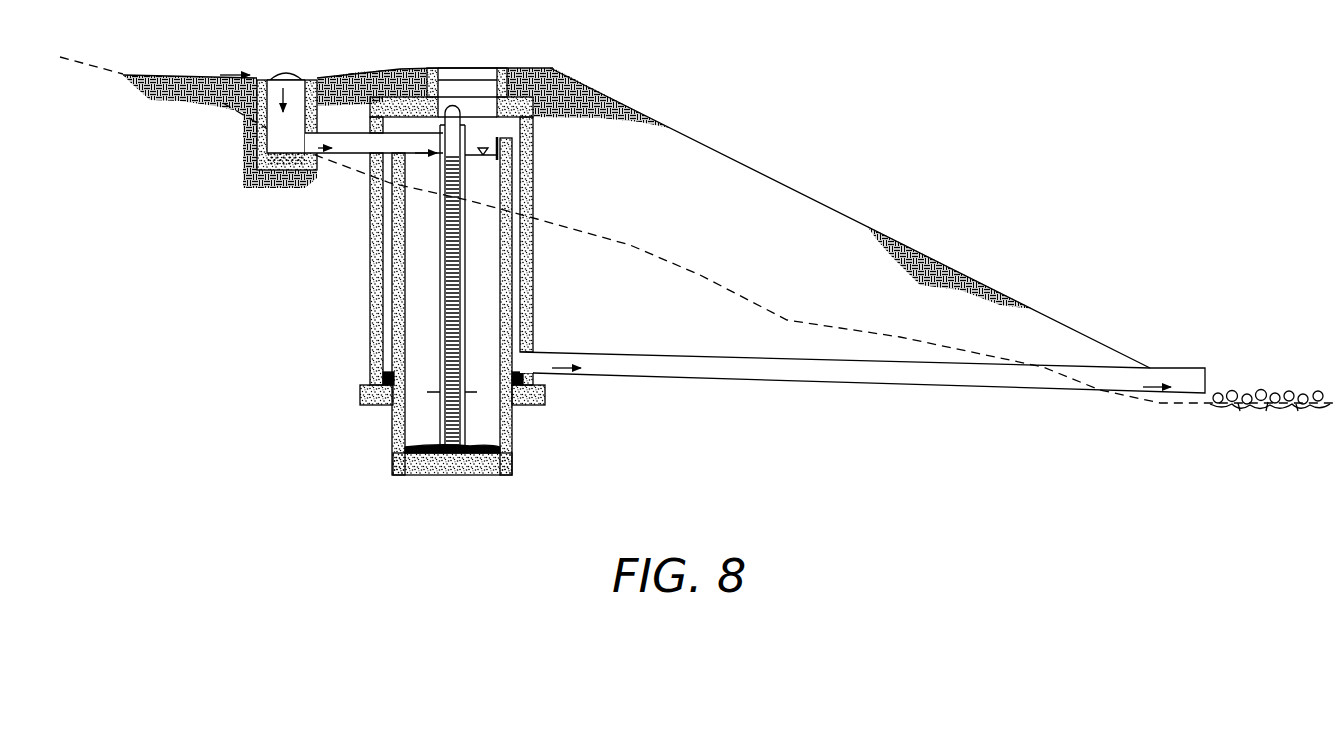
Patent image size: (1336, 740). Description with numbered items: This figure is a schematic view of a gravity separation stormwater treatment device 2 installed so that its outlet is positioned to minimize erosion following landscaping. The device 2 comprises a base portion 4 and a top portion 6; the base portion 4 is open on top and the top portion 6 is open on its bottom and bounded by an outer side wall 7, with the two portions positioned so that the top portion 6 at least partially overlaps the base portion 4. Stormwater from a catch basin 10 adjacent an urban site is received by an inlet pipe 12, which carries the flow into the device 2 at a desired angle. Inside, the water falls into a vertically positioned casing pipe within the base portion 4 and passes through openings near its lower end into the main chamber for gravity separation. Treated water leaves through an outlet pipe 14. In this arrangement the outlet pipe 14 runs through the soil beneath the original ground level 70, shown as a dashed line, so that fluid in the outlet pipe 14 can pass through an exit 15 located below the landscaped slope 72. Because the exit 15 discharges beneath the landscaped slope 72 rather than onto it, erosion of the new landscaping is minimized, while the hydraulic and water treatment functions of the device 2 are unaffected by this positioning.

The gravity separation stormwater treatment device 2 is at (408, 296).
The base portion 4 is at (448, 462).
The top portion 6 is at (364, 325).
The outer or side wall 7 is at (370, 283).
The catch basin 10 is at (293, 97).
The inlet pipe 12 is at (355, 138).
The outlet pipe 14 is at (820, 374).
The exit 15 is at (1208, 378).
The original ground level 70 is at (660, 257).
The landscaped slope 72 is at (780, 182).